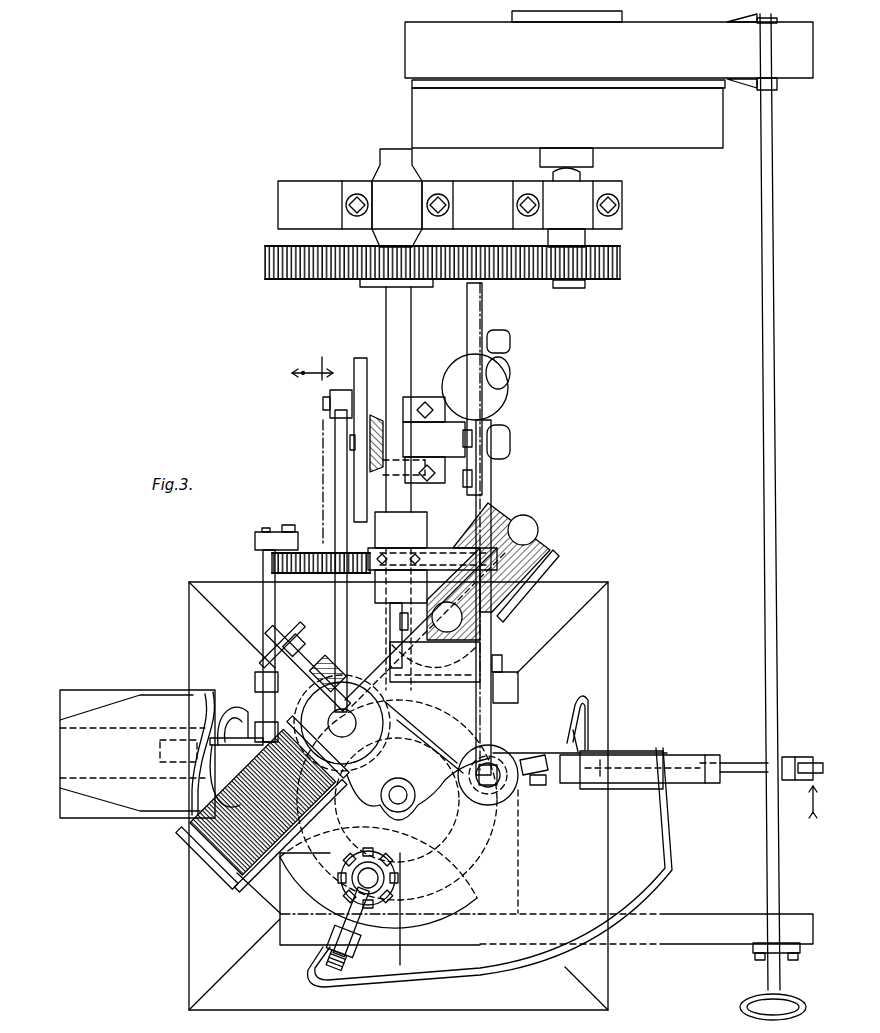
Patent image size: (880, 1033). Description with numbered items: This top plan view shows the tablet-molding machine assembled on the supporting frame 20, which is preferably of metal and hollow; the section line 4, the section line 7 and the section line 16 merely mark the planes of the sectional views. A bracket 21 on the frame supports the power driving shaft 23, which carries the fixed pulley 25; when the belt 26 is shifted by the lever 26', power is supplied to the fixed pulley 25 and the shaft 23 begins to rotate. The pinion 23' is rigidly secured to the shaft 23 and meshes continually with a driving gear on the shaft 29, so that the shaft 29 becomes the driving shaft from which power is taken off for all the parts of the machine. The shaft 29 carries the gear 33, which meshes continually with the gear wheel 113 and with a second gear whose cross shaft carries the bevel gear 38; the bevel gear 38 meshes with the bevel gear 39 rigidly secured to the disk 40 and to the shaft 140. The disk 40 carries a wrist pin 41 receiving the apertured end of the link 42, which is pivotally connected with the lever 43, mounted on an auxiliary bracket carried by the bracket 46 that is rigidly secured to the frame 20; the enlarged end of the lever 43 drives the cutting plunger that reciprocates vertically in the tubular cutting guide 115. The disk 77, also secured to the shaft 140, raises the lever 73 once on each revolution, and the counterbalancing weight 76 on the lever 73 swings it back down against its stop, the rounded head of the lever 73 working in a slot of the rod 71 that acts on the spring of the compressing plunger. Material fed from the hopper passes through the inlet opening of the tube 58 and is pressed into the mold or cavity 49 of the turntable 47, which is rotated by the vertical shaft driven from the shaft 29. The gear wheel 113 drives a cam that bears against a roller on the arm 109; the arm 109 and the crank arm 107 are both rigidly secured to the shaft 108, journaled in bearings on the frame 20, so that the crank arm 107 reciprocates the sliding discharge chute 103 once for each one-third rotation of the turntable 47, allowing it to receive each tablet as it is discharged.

The supporting frame 20 is at (268, 995).
The fixed pulley 25 is at (713, 140).
The belt 26 is at (776, 502).
The lever 26' is at (781, 992).
The bracket 21 is at (618, 190).
The power driving shaft 23 is at (581, 218).
The pinion 23' is at (458, 257).
The bracket 46 is at (513, 284).
The driving shaft 29 is at (398, 352).
The disk 77 is at (482, 318).
The lever 73 is at (492, 480).
The counterbalancing weight 76 is at (505, 386).
The bevel gear 39 is at (378, 413).
The bevel gear 38 is at (430, 482).
The disk 40 is at (362, 365).
The shaft 140 is at (397, 445).
The section line 4 is at (355, 655).
The wrist pin 41 is at (323, 403).
The link 42 is at (332, 415).
The lever 43 is at (340, 506).
The gear 33 is at (357, 552).
The mold 49 is at (525, 540).
The arm 109 is at (256, 546).
The gear wheel 113 is at (272, 565).
The shaft 108 is at (262, 614).
The crank arm 107 is at (236, 712).
The chute 103 is at (160, 800).
The disc 7 is at (470, 870).
The tubular cutting guide 115 is at (363, 760).
The roller 16 is at (585, 798).
The rod 71 is at (498, 780).
The tube 58 is at (497, 787).
The turntable 47 is at (488, 900).